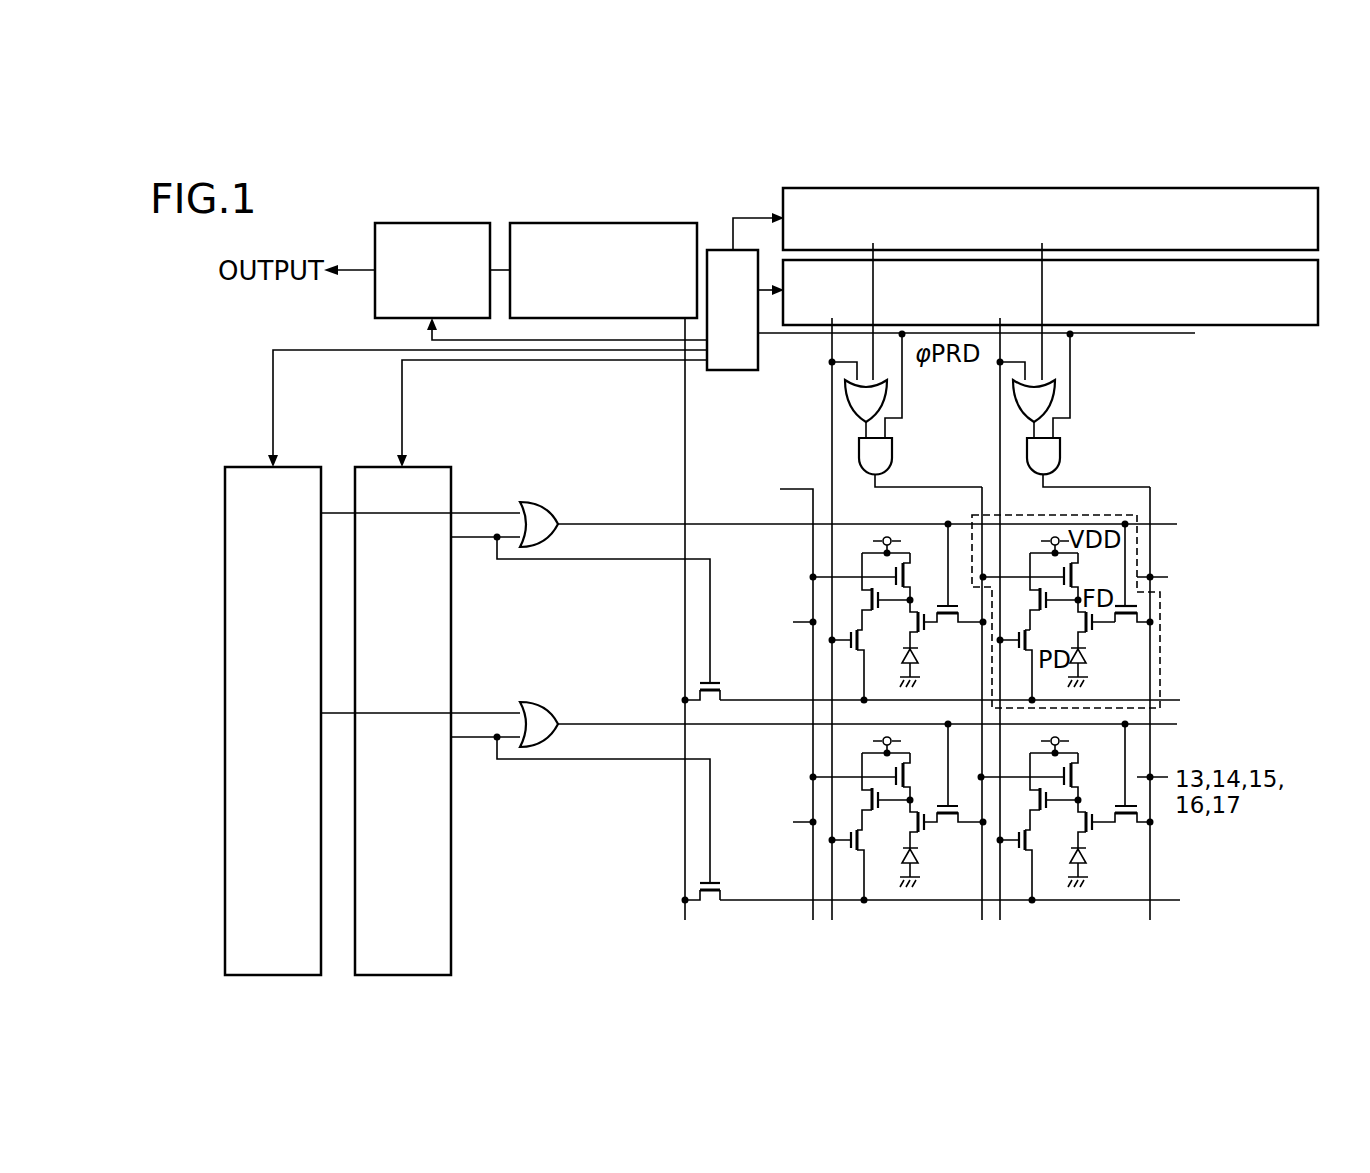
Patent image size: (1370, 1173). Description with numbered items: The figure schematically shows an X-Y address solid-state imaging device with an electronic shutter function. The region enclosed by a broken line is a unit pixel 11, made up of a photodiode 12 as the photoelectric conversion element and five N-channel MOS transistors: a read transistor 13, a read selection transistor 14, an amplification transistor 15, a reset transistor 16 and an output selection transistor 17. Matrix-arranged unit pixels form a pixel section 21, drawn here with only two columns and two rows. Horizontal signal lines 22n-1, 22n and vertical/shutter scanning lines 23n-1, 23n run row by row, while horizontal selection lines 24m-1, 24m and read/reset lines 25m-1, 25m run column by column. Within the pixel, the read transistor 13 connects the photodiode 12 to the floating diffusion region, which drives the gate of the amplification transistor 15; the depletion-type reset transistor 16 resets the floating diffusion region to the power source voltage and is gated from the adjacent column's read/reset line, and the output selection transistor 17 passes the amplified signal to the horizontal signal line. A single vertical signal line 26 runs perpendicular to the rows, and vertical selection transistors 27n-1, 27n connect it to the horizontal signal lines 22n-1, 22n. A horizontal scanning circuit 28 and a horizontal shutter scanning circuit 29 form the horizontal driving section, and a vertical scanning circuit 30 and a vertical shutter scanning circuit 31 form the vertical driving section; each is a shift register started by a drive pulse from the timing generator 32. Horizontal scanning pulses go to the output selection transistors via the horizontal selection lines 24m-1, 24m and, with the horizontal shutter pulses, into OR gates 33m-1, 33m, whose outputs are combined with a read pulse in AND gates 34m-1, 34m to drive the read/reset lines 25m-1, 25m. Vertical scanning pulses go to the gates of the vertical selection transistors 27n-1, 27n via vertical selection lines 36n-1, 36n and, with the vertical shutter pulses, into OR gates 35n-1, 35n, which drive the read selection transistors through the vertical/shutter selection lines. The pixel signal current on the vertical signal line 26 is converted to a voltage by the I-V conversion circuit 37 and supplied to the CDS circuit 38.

The unit pixel 11 is at (1162, 605).
The photodiode 12 is at (1086, 660).
The read transistor 13 is at (1083, 621).
The read selection transistor 14 is at (1129, 615).
The amplification transistor 15 is at (1040, 595).
The reset transistor 16 is at (1076, 574).
The output selection transistor 17 is at (1027, 651).
The pixel section 21 is at (1238, 505).
The horizontal signal line 22n is at (772, 699).
The horizontal signal line 22n-1 is at (772, 903).
The vertical/shutter scanning line 23n is at (598, 522).
The vertical/shutter scanning line 23n-1 is at (598, 722).
The horizontal selection line 24m is at (1000, 917).
The horizontal selection line 24m-1 is at (830, 871).
The read/reset line 25m is at (1152, 917).
The read/reset line 25m-1 is at (982, 917).
The vertical signal line 26 is at (685, 858).
The vertical selection transistor 27n is at (722, 688).
The vertical selection transistor 27n-1 is at (713, 903).
The horizontal scanning circuit 28 is at (1318, 292).
The horizontal shutter scanning circuit 29 is at (1318, 217).
The vertical scanning circuit 30 is at (427, 467).
The vertical shutter scanning circuit 31 is at (297, 467).
The timing generator 32 is at (736, 370).
The OR gate 33m is at (1055, 400).
The OR gate 33m-1 is at (887, 400).
The AND gate 34m is at (1060, 455).
The AND gate 34m-1 is at (892, 455).
The OR gate 35n is at (558, 530).
The OR gate 35n-1 is at (558, 730).
The vertical selection line 36n is at (598, 562).
The vertical selection line 36n-1 is at (598, 762).
The I-V conversion circuit 37 is at (666, 223).
The CDS circuit 38 is at (461, 223).